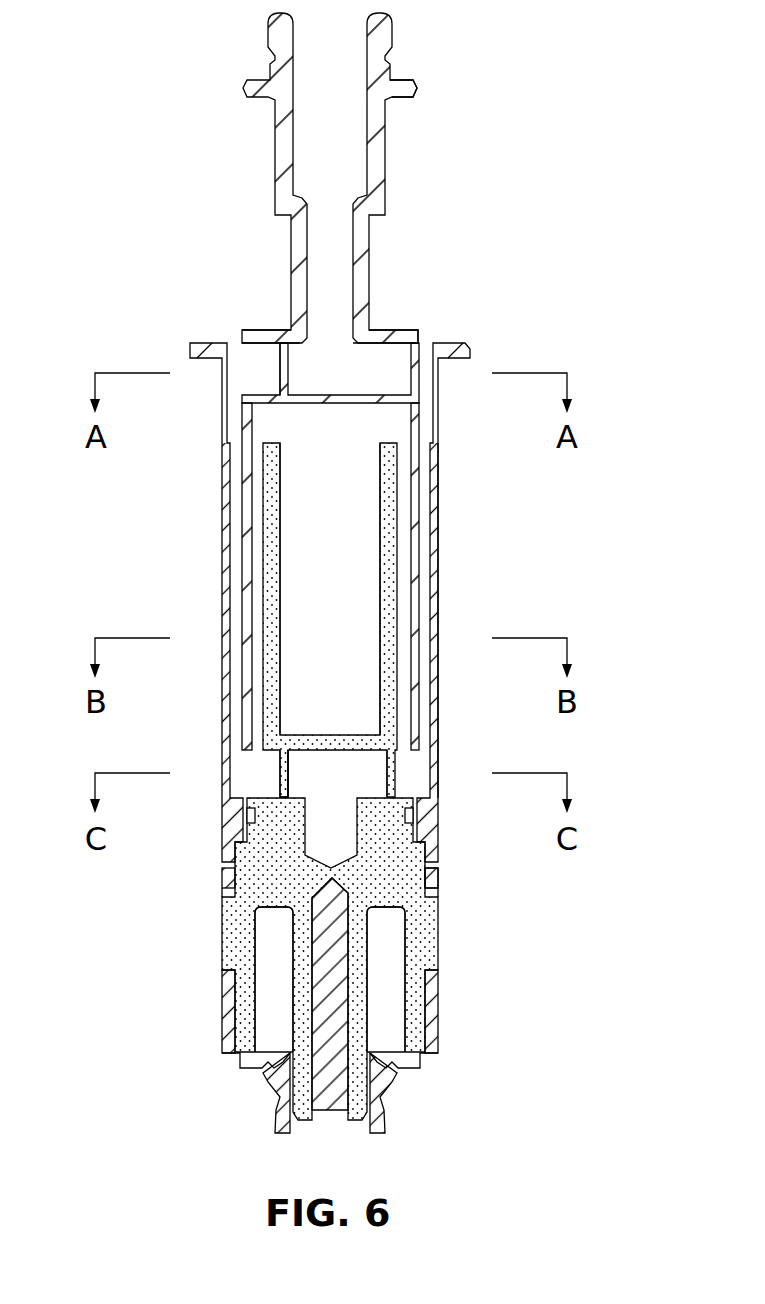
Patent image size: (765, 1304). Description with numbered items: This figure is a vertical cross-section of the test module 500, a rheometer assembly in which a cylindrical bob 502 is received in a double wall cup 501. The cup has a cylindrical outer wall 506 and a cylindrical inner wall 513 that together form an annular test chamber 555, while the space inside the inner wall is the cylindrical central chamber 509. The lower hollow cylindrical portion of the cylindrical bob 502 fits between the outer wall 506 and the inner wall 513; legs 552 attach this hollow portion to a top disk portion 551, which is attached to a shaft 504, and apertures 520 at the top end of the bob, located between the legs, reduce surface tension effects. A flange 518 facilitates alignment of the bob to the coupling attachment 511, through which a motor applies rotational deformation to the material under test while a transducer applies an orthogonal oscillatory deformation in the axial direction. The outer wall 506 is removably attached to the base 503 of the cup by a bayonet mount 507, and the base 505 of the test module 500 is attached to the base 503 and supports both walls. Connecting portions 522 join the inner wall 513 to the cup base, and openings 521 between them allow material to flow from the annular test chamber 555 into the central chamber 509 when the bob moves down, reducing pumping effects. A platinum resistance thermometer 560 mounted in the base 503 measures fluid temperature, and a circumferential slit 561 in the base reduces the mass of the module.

The test module 500 is at (118, 137).
The double wall cup 501 is at (437, 462).
The cylindrical bob 502 is at (257, 328).
The base 503 is at (393, 893).
The shaft 504 is at (380, 268).
The base 505 is at (435, 1000).
The outer wall 506 is at (442, 557).
The bayonet mount 507 is at (438, 863).
The cylindrical central chamber 509 is at (300, 547).
The coupling attachment 511 is at (380, 1105).
The inner wall 513 is at (391, 585).
The flange 518 is at (403, 83).
The apertures 520 is at (390, 377).
The openings 521 is at (377, 772).
The connecting portions 522 is at (273, 777).
The top disk portion 551 is at (400, 330).
The legs 552 is at (277, 363).
The annular test chamber 555 is at (238, 565).
The platinum resistance thermometer 560 is at (325, 1078).
The circumferential slit 561 is at (270, 953).